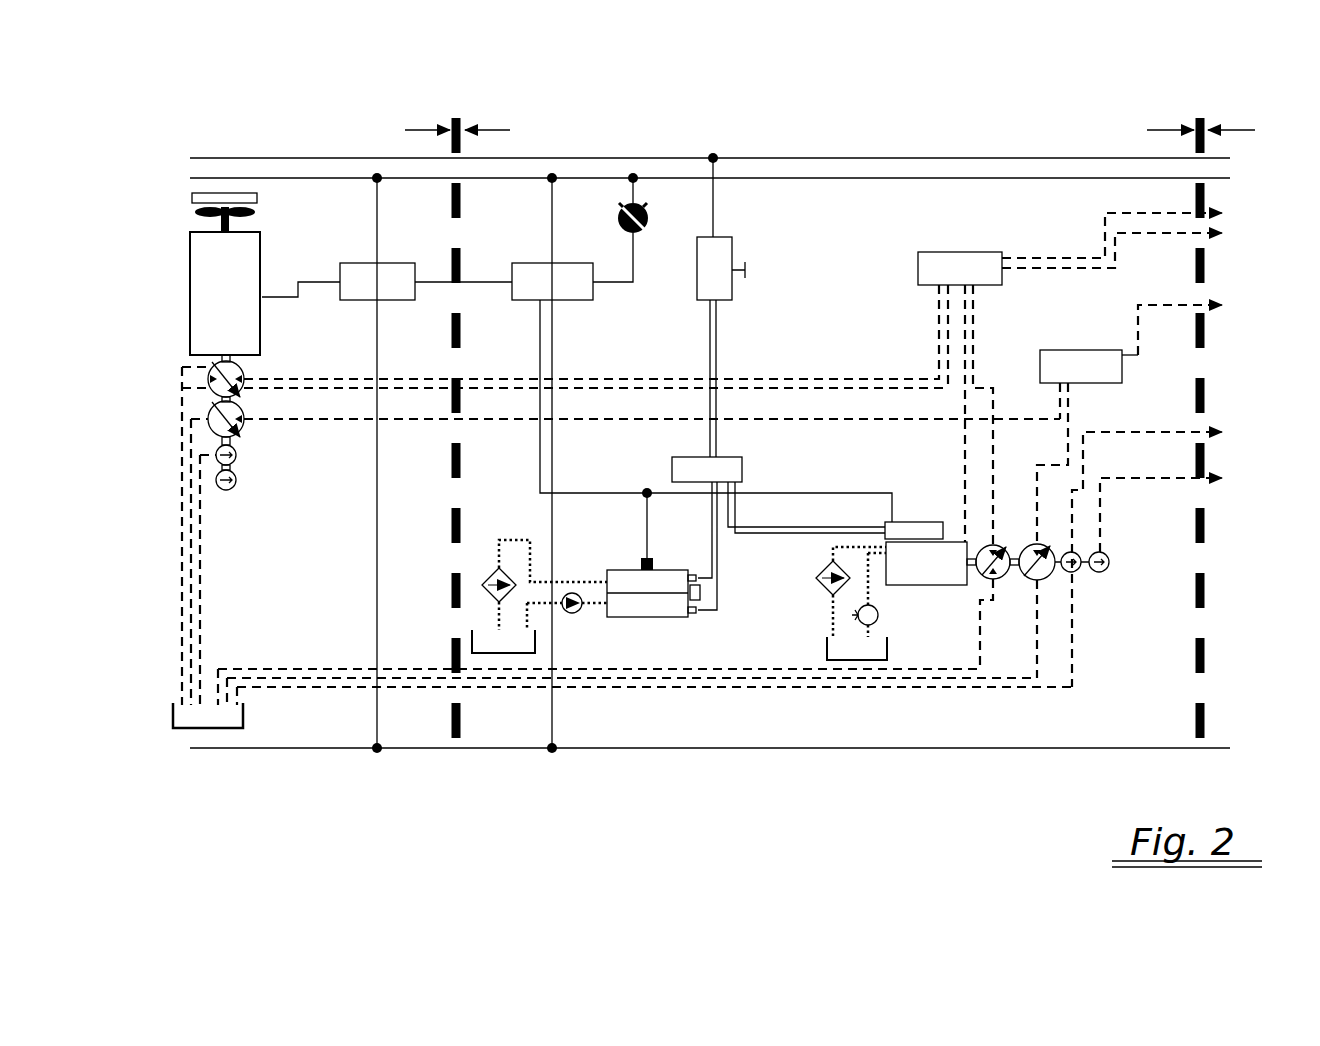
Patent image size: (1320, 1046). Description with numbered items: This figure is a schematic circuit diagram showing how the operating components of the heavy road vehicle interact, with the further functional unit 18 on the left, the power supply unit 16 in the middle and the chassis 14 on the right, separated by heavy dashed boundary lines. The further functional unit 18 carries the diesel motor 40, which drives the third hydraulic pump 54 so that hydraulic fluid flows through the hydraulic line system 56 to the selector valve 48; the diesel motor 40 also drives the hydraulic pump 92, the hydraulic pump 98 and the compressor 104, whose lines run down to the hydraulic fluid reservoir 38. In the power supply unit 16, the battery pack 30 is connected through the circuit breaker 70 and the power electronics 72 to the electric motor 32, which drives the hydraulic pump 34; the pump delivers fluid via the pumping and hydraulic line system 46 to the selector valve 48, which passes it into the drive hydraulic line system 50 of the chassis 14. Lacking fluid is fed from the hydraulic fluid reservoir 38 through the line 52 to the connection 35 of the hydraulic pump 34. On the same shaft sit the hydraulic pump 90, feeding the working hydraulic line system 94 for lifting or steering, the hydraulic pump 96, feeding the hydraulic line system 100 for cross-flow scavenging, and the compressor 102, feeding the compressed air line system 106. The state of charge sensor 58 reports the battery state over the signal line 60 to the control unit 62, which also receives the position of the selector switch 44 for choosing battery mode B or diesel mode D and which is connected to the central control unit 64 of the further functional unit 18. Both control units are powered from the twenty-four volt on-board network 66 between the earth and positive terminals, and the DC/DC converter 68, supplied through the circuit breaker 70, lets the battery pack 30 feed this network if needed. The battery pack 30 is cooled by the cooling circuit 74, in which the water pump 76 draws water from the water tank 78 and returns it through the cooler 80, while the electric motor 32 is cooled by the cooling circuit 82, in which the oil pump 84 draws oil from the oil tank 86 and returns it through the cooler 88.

The chassis 14 is at (1260, 436).
The power supply unit 16 is at (892, 121).
The further functional unit 18 is at (425, 440).
The battery pack 30 is at (655, 617).
The electric motor 32 is at (910, 580).
The hydraulic pump 34 is at (1022, 582).
The connection 35 is at (985, 582).
The hydraulic fluid reservoir 38 is at (185, 718).
The diesel motor 40 is at (205, 292).
The selector switch 44 is at (652, 210).
The pumping and hydraulic line system 46 is at (968, 328).
The selector valve 48 is at (955, 272).
The drive hydraulic line system 50 is at (1138, 239).
The line 52 is at (735, 672).
The third hydraulic pump 54 is at (207, 383).
The hydraulic line system 56 is at (815, 378).
The state of charge sensor 58 is at (655, 560).
The signal line 60 is at (610, 495).
The control unit 62 is at (535, 278).
The central control unit 64 is at (385, 278).
The on-board network 66 is at (862, 177).
The DC/DC converter 68 is at (720, 252).
The circuit breaker 70 is at (672, 470).
The power electronics 72 is at (903, 535).
The cooling circuit 74 is at (510, 537).
The water pump 76 is at (575, 613).
The water tank 78 is at (470, 645).
The cooler 80 is at (478, 581).
The cooling circuit 82 is at (835, 547).
The oil pump 84 is at (878, 620).
The oil tank 86 is at (827, 641).
The cooler 88 is at (815, 580).
The hydraulic pump 90 is at (1047, 580).
The hydraulic pump 92 is at (207, 425).
The working hydraulic line system 94 is at (1154, 419).
The hydraulic pump 96 is at (1075, 573).
The hydraulic pump 98 is at (212, 457).
The hydraulic line system 100 is at (1179, 554).
The compressor 102 is at (1103, 573).
The compressor 104 is at (218, 483).
The compressed air line system 106 is at (1193, 510).